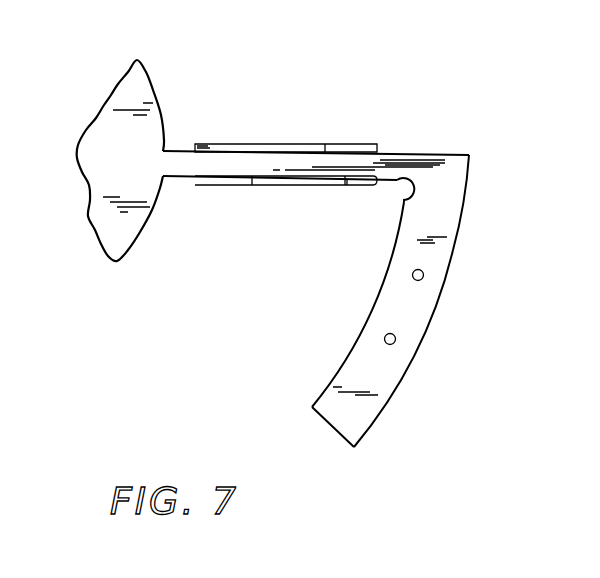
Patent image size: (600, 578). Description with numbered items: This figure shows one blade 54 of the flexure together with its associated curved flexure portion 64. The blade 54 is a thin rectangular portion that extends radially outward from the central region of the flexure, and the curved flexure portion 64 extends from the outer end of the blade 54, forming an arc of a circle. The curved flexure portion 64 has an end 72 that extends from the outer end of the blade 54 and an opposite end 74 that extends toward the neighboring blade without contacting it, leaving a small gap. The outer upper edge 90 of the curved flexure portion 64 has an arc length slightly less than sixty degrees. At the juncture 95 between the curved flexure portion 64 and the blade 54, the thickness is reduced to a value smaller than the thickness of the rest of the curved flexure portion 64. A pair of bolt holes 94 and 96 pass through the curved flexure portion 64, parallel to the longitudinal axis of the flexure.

The blade 54 is at (181, 151).
The end 72 is at (468, 180).
The outer upper edge 90 is at (418, 303).
The curved flexure portion 64 is at (423, 353).
The end 74 is at (322, 420).
The bolt hole 94 is at (412, 275).
The juncture 95 is at (401, 186).
The bolt hole 96 is at (384, 339).